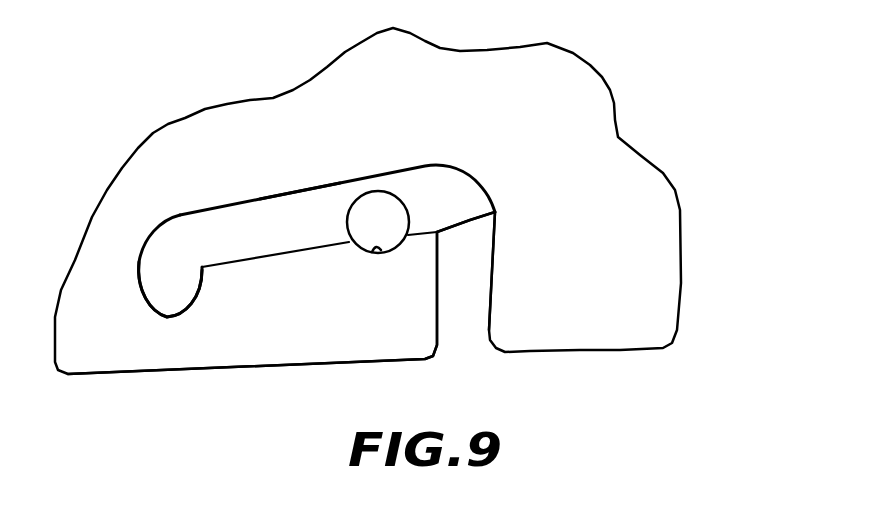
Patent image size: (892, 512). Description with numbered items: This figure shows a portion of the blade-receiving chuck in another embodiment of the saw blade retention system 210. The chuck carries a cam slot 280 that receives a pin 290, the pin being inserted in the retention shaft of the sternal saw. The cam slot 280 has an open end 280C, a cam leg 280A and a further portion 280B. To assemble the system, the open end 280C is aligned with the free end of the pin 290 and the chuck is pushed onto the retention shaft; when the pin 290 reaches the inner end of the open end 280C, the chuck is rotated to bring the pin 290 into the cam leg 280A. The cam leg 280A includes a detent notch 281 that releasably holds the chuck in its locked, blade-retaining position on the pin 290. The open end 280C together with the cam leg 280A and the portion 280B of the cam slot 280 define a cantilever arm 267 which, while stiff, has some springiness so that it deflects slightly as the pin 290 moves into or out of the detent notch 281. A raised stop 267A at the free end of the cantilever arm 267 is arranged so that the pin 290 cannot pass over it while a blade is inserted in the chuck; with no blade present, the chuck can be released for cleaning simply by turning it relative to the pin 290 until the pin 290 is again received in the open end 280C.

The saw blade retention system 210 is at (633, 93).
The cam slot 280 is at (235, 258).
The cam leg 280A is at (287, 207).
The portion of the cam slot 280B is at (170, 308).
The open end of the cam slot 280C is at (489, 330).
The cantilever arm 267 is at (260, 342).
The raised stop 267A is at (495, 212).
The pin 290 is at (378, 207).
The detent notch 281 is at (376, 247).